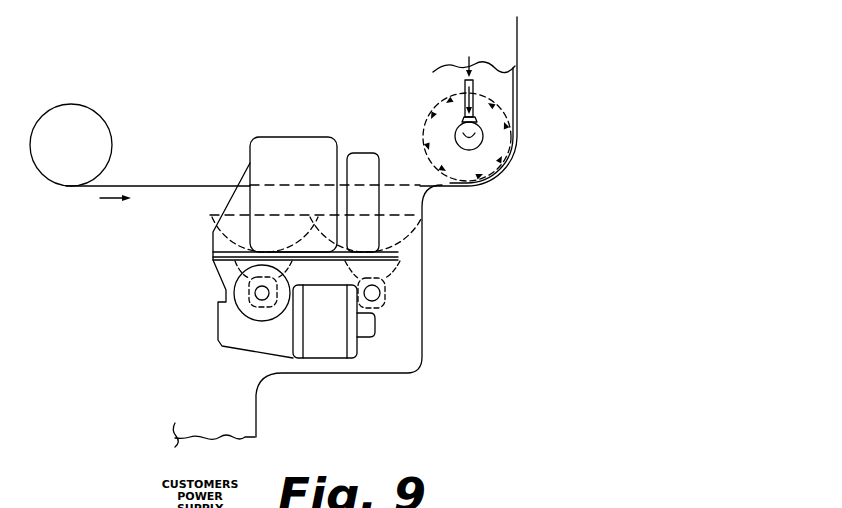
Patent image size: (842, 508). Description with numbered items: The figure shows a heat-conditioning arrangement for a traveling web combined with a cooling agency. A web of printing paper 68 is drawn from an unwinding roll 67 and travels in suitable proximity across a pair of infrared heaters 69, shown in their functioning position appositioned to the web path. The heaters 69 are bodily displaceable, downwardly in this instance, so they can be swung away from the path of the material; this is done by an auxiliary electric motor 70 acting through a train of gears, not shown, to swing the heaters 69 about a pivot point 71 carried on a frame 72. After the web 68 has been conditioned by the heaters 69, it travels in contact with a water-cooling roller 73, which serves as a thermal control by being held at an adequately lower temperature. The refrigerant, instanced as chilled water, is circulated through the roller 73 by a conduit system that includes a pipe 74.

The unwinding roll 67 is at (102, 125).
The web of printing paper 68 is at (193, 184).
The infrared heaters 69 is at (217, 216).
The auxiliary electric motor 70 is at (333, 352).
The pivot point 71 is at (253, 297).
The frame 72 is at (413, 337).
The water-cooling roller 73 is at (503, 143).
The pipe 74 is at (465, 81).